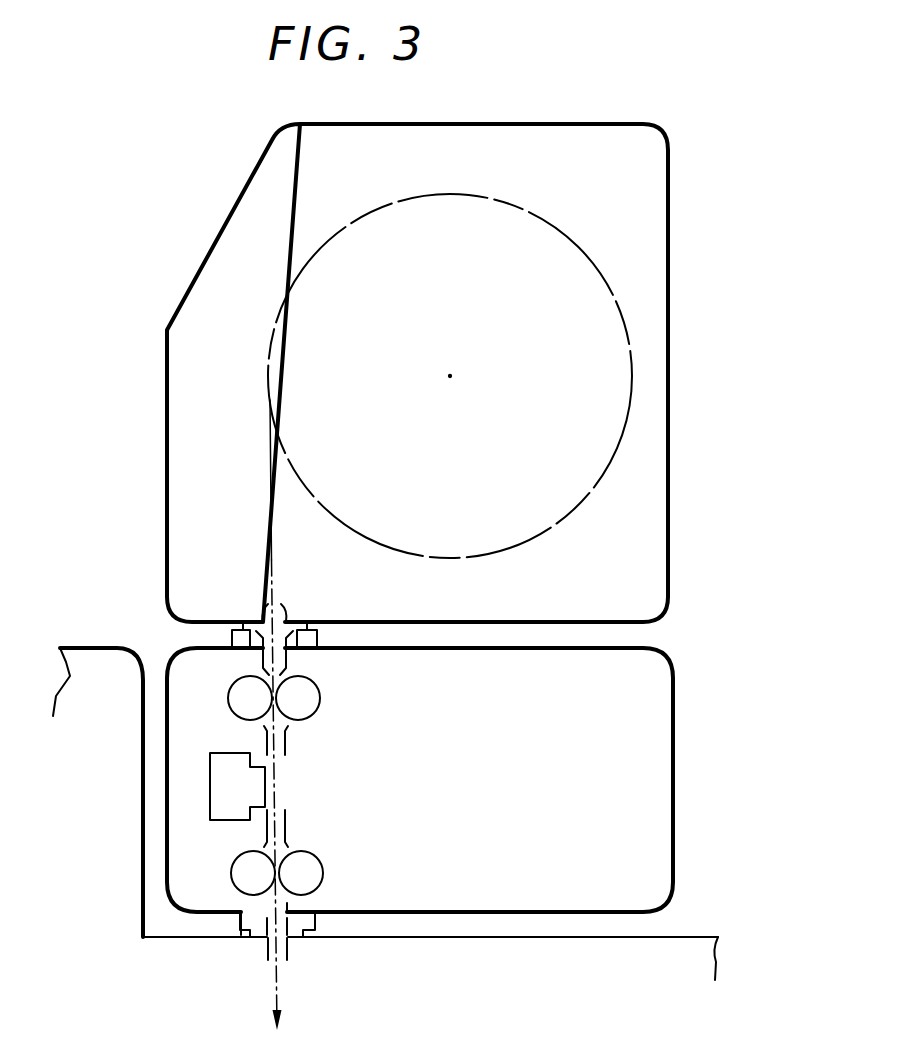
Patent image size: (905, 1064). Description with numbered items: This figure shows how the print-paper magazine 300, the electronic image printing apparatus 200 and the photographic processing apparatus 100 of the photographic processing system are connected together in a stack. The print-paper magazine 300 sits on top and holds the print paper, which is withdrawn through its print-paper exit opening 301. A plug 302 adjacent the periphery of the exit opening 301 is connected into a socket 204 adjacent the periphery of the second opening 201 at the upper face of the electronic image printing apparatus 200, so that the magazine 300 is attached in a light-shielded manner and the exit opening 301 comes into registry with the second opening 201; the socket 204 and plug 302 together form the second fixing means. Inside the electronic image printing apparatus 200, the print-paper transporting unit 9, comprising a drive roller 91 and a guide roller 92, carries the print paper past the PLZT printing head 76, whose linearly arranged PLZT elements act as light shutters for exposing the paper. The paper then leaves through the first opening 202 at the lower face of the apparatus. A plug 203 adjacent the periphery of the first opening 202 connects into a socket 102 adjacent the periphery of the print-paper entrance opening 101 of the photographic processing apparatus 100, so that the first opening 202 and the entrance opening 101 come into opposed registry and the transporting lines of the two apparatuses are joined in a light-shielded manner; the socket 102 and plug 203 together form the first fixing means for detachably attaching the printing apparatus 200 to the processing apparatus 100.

The print-paper transporting unit 9 is at (304, 741).
The PLZT printing head 76 is at (210, 806).
The drive roller 91 is at (313, 712).
The guide roller 92 is at (313, 853).
The photographic processing apparatus 100 is at (718, 937).
The print-paper entrance opening 101 is at (268, 952).
The socket 102 is at (240, 935).
The electronic image printing apparatus 200 is at (665, 850).
The second opening 201 is at (283, 662).
The first opening 202 is at (288, 905).
The plug 203 is at (238, 920).
The socket 204 is at (228, 637).
The print-paper magazine 300 is at (650, 207).
The print-paper exit opening 301 is at (293, 613).
The plug 302 is at (247, 620).